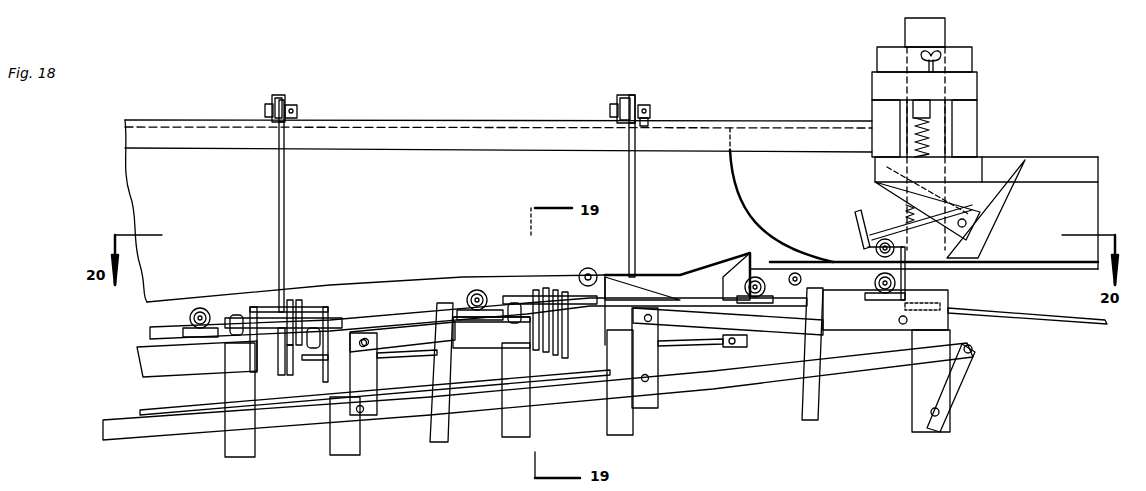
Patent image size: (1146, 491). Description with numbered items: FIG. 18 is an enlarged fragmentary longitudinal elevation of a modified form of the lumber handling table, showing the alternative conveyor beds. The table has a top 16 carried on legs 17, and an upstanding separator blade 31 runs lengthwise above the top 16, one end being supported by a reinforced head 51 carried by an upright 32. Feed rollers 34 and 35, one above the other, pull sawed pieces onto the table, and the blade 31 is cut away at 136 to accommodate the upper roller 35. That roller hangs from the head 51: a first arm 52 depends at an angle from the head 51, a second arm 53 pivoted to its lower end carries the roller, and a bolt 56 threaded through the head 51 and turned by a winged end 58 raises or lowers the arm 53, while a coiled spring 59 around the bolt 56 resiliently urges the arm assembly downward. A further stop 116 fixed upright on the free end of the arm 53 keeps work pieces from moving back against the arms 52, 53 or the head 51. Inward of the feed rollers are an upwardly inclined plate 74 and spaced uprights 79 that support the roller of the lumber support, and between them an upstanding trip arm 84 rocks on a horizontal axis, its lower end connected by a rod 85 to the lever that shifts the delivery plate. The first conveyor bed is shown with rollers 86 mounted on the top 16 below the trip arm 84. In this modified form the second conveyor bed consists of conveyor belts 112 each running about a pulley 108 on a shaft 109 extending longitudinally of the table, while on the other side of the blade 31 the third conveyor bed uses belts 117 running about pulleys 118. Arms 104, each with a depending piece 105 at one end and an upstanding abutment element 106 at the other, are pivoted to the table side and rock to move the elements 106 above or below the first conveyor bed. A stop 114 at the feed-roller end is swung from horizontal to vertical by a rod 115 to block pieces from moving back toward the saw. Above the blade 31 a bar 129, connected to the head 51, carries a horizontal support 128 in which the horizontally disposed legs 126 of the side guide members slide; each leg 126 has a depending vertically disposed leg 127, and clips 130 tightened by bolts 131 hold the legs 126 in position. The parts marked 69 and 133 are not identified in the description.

The table top 16 is at (150, 358).
The legs 17 is at (228, 446).
The separator blade 31 is at (505, 143).
The upright 32 is at (932, 32).
The lower feed roller 34 is at (873, 279).
The upper feed roller 35 is at (897, 230).
The reinforced head 51 is at (986, 63).
The first arm 52 is at (938, 205).
The second arm 53 is at (985, 238).
The bolt 56 is at (930, 70).
The winged end 58 is at (925, 55).
The coiled spring 59 is at (930, 140).
The chute bottom 69 is at (826, 257).
The upwardly inclined plate 74 is at (665, 288).
The uprights 79 is at (625, 274).
The trip arm 84 is at (740, 270).
The rod 85 is at (700, 352).
The rollers 86 is at (204, 306).
The arm 104 is at (398, 340).
The depending piece 105 is at (385, 392).
The upstanding abutment element 106 is at (445, 382).
The pulley 108 is at (305, 305).
The shaft 109 is at (365, 318).
The conveyor belts 112 is at (297, 300).
The stop 114 is at (935, 277).
The rod 115 is at (1035, 322).
The further stop 116 is at (850, 212).
The belts 117 is at (285, 378).
The pulley 118 is at (275, 365).
The horizontally disposed leg 126 is at (268, 108).
The vertically disposed leg 127 is at (285, 200).
The horizontal support 128 is at (277, 124).
The bar 129 is at (705, 135).
The clips 130 is at (285, 95).
The bolts 131 is at (300, 115).
The bar 133 is at (755, 370).
The cut away 136 is at (745, 187).